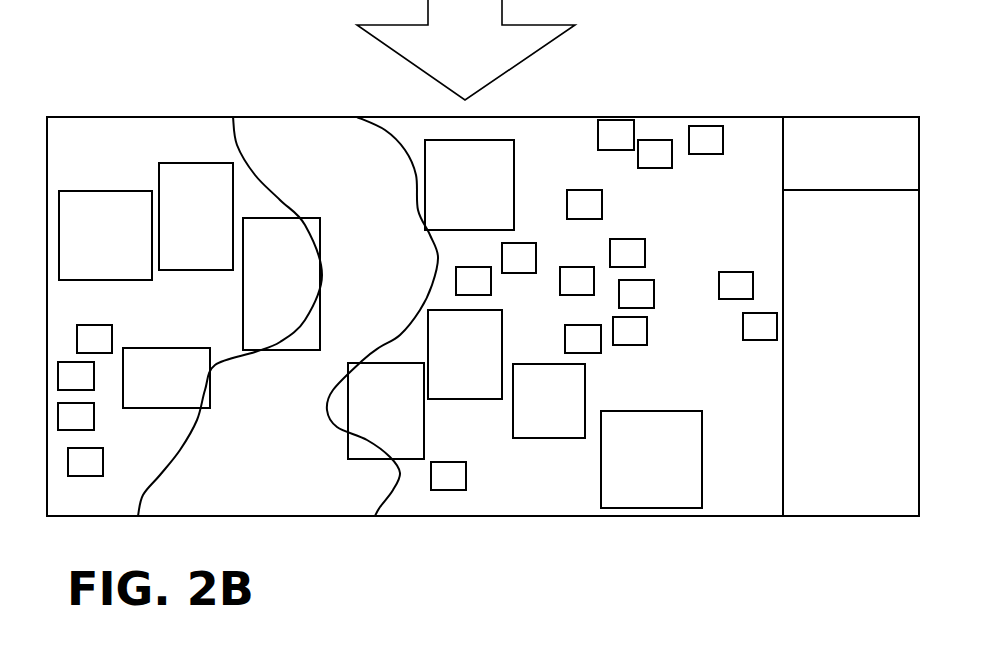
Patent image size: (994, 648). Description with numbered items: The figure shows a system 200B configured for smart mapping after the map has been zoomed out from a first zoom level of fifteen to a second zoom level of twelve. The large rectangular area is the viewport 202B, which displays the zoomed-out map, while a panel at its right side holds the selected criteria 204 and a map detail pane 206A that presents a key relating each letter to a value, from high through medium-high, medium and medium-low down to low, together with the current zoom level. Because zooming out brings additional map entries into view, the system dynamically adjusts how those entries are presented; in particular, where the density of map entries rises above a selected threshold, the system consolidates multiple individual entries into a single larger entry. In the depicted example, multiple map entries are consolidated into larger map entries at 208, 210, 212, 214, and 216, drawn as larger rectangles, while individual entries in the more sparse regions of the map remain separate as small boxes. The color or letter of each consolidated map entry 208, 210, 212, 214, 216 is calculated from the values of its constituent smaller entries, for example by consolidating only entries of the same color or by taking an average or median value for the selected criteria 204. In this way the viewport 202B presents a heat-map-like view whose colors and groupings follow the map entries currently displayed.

The system configured for smart mapping 200B is at (106, 28).
The viewport 202B is at (125, 117).
The criteria 204 is at (851, 153).
The map detail pane 206A is at (837, 544).
The consolidated map entry 208 is at (131, 191).
The consolidated map entry 210 is at (243, 296).
The consolidated map entry 212 is at (424, 424).
The consolidated map entry 214 is at (483, 310).
The consolidated map entry 216 is at (628, 411).